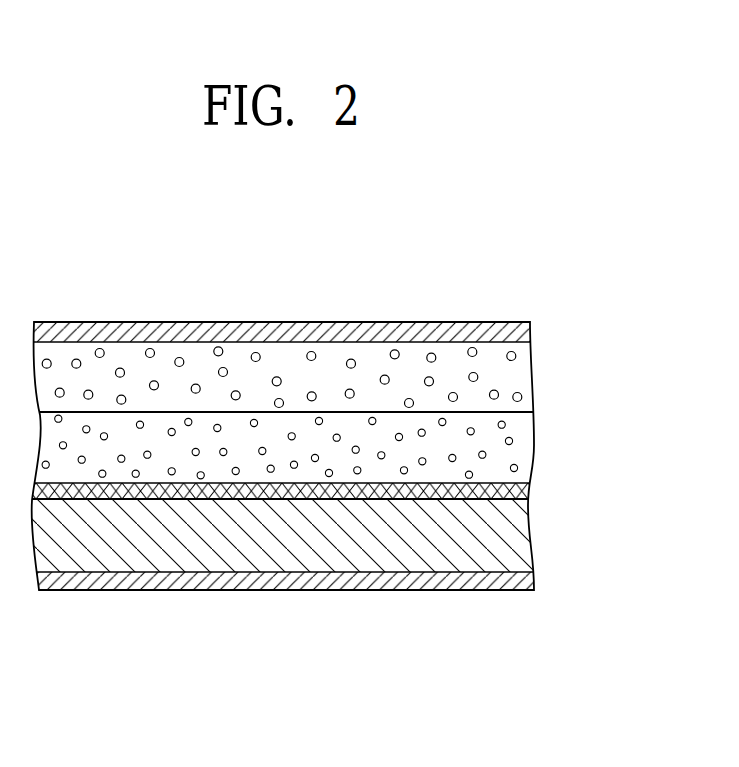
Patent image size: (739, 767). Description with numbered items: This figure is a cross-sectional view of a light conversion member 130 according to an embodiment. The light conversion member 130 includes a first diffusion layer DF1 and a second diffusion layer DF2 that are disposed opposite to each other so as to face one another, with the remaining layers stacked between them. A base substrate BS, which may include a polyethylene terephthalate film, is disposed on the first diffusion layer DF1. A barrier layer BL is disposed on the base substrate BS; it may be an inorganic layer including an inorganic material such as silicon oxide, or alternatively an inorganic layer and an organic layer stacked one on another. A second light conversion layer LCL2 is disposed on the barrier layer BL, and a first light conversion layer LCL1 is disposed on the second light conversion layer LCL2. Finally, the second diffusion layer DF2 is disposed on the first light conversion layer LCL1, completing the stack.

The light conversion member 130 is at (468, 278).
The second diffusion layer DF2 is at (520, 337).
The first light conversion layer LCL1 is at (517, 374).
The second light conversion layer LCL2 is at (521, 447).
The barrier layer BL is at (518, 491).
The base substrate BS is at (519, 534).
The first diffusion layer DF1 is at (522, 580).